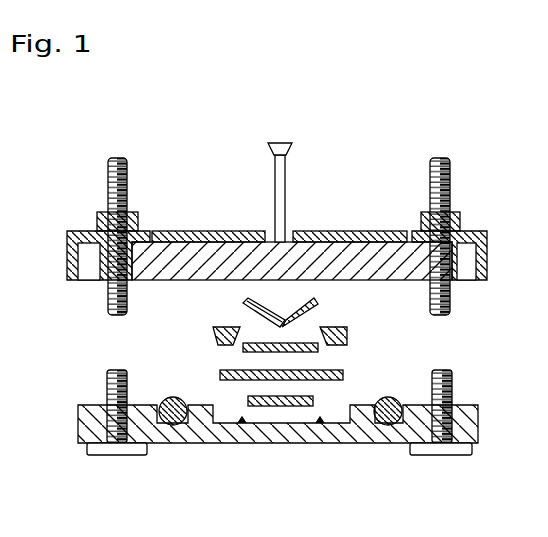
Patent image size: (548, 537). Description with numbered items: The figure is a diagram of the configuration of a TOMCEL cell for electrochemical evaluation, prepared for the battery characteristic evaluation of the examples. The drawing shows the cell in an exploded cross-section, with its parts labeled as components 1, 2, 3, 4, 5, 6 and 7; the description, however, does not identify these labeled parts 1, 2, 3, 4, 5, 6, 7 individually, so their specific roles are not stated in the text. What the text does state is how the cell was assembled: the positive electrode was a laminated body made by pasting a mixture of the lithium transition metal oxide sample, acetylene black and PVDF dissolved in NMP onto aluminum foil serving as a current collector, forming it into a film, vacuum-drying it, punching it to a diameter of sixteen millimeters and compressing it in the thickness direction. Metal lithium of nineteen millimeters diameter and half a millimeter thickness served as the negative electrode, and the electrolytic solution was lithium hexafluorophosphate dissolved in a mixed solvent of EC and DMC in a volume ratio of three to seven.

The lower plate 1 is at (191, 437).
The upper plate 2 is at (353, 240).
The lower plate member 3 is at (248, 400).
The plate member 4 is at (345, 377).
The spacer blocks 5 is at (350, 331).
The plate member 6 is at (320, 350).
The V-shaped member 7 is at (318, 303).